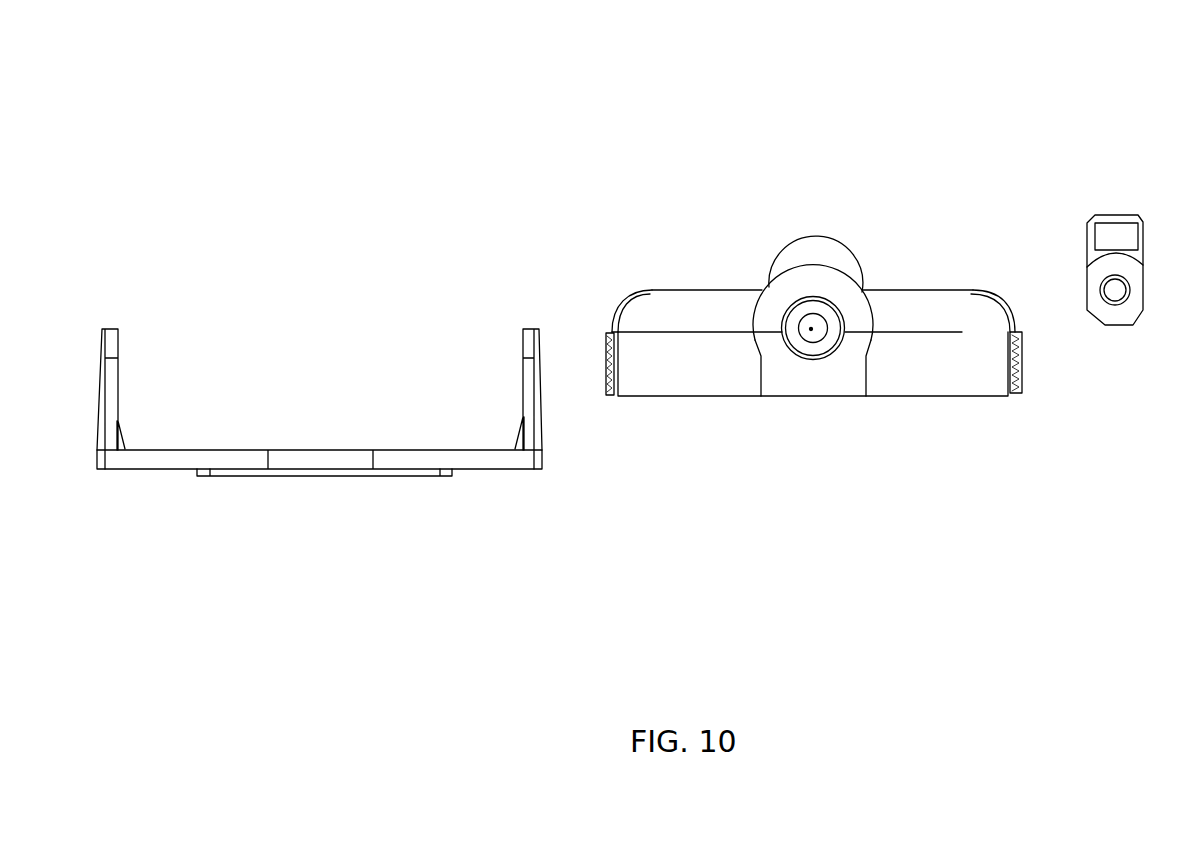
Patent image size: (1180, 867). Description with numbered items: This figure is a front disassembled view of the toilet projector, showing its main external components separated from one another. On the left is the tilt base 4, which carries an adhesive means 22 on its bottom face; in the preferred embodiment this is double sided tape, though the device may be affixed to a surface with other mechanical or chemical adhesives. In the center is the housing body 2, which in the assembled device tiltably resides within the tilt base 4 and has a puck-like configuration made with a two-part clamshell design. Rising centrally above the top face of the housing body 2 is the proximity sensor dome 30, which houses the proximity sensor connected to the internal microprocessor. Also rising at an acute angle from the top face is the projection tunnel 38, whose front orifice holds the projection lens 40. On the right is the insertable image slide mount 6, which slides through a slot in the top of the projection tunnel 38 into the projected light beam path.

The housing body 2 is at (660, 293).
The tilt base 4 is at (206, 449).
The insertable image slide mount 6 is at (1112, 214).
The adhesive means 22 is at (353, 475).
The proximity sensor dome 30 is at (810, 252).
The projection tunnel 38 is at (838, 292).
The projection lens 40 is at (807, 329).